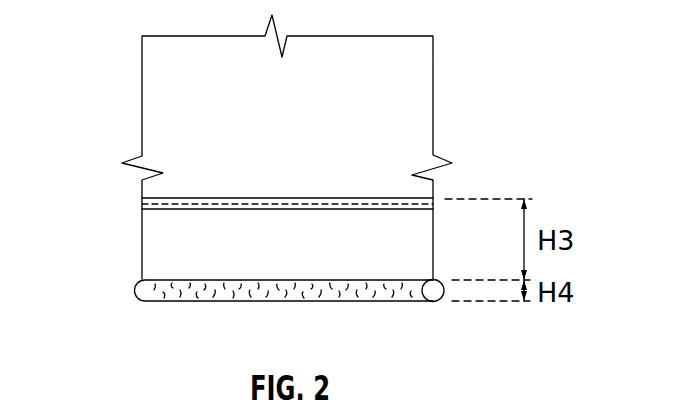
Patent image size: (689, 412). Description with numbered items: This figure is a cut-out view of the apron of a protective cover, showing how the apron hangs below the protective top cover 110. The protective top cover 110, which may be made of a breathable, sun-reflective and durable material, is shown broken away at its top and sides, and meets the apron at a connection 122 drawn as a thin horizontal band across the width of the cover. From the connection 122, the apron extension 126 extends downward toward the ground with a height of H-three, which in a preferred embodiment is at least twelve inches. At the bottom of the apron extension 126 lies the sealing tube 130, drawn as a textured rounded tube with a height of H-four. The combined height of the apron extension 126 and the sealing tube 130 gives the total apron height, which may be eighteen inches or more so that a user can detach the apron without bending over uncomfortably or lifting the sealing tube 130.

The protective top cover 110 is at (423, 100).
The connection 122 is at (136, 201).
The apron extension 126 is at (143, 243).
The sealing tube 130 is at (424, 320).